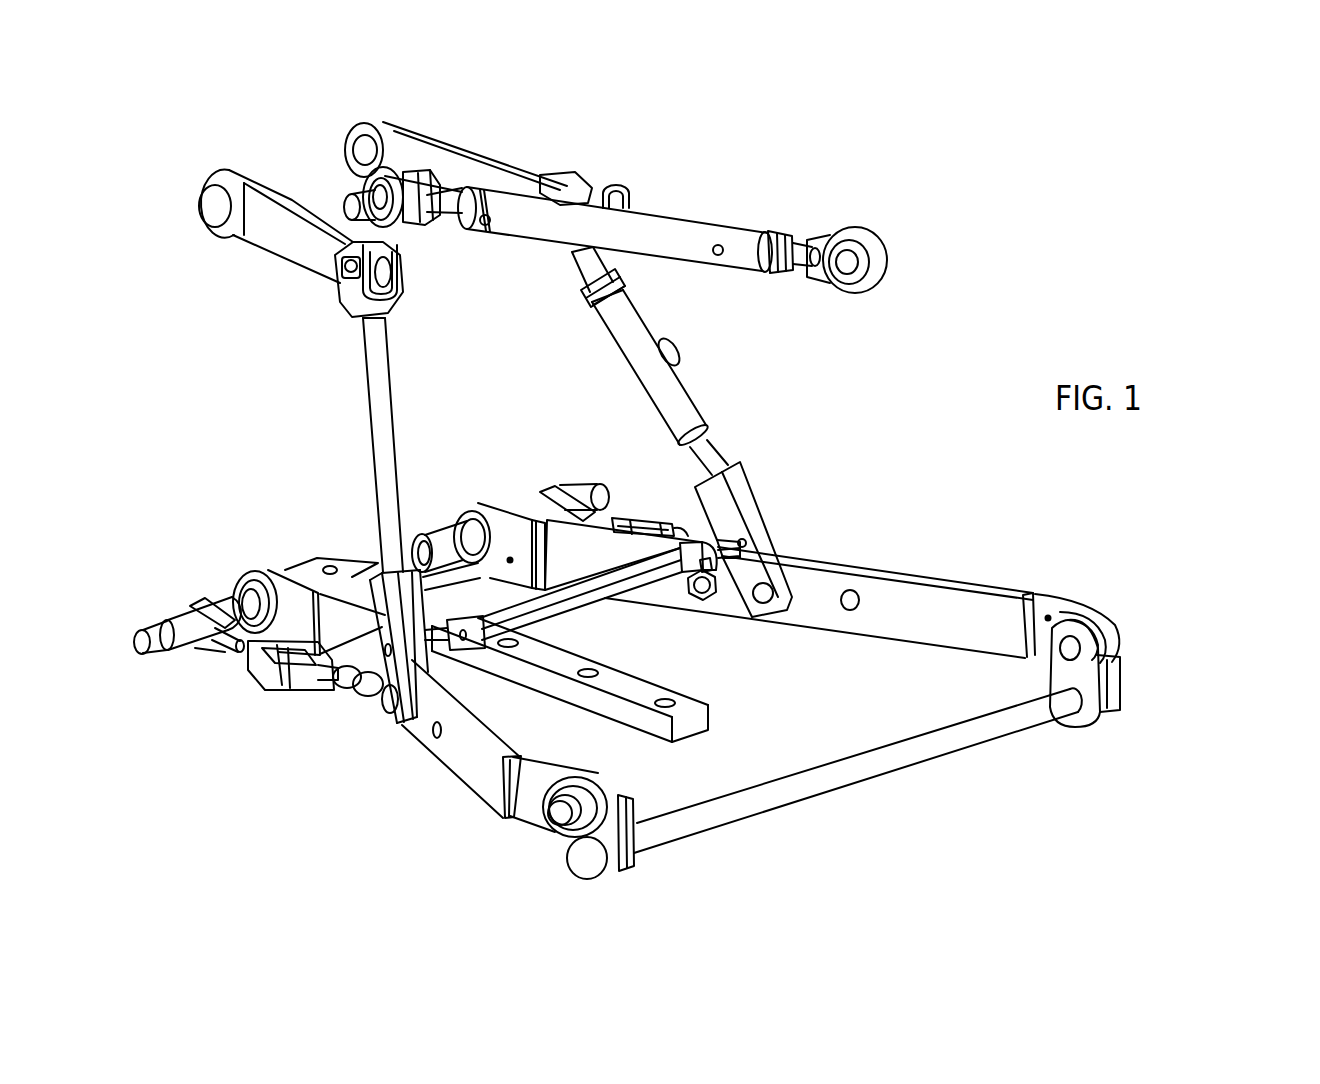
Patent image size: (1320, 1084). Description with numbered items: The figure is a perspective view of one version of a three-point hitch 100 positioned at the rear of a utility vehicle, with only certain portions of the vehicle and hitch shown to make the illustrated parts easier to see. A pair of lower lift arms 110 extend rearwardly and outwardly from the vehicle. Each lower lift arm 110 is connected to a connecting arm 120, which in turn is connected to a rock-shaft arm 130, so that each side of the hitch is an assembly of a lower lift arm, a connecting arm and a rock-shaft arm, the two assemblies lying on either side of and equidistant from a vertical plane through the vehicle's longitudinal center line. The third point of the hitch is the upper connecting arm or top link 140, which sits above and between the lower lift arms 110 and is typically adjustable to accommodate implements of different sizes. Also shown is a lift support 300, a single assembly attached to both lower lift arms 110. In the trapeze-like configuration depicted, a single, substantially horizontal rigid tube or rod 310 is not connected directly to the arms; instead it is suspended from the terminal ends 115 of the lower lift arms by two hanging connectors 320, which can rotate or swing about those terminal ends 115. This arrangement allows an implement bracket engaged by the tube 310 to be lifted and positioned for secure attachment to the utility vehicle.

The 3-point hitch 100 is at (920, 213).
The lower lift arm 110 is at (923, 608).
The terminal end of lower lift arm 115 is at (567, 837).
The connecting arm 120 is at (683, 407).
The rock-shaft arm 130 is at (290, 240).
The top link 140 is at (675, 238).
The lift support 300 is at (937, 802).
The tube or rod 310 is at (987, 725).
The hanging connector 320 is at (1090, 682).